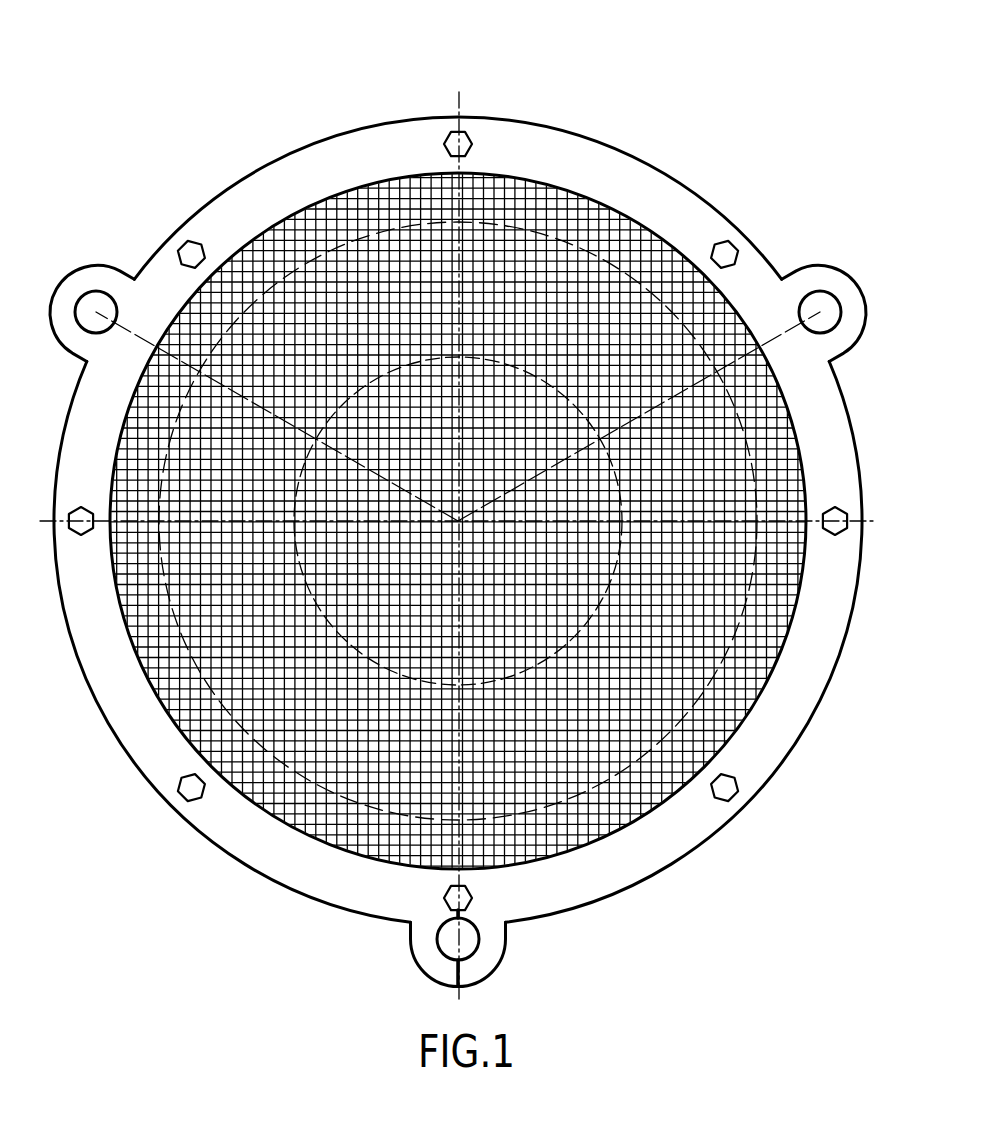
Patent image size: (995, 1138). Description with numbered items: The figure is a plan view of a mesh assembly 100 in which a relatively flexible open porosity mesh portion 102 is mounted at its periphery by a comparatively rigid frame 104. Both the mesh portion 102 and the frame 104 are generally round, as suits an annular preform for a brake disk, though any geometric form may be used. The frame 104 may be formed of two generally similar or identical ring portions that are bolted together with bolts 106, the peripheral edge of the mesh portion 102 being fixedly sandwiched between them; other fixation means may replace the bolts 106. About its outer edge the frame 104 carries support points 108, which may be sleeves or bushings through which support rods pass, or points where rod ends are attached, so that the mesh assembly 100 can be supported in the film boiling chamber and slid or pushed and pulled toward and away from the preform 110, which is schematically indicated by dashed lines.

The mesh assembly 100 is at (603, 88).
The open porosity mesh portion 102 is at (248, 682).
The frame 104 is at (641, 197).
The bolts 106 is at (462, 141).
The support points 108 is at (96, 312).
The preform 110 is at (590, 790).